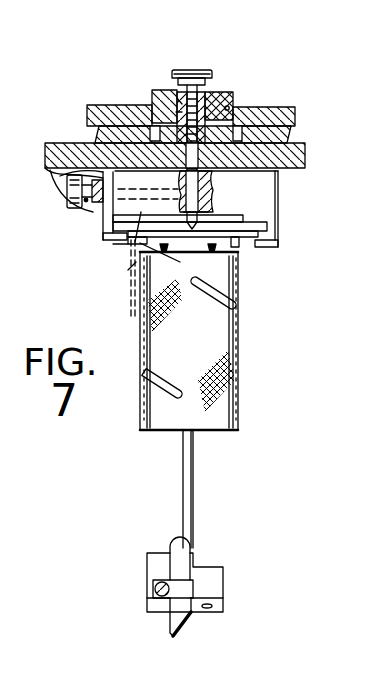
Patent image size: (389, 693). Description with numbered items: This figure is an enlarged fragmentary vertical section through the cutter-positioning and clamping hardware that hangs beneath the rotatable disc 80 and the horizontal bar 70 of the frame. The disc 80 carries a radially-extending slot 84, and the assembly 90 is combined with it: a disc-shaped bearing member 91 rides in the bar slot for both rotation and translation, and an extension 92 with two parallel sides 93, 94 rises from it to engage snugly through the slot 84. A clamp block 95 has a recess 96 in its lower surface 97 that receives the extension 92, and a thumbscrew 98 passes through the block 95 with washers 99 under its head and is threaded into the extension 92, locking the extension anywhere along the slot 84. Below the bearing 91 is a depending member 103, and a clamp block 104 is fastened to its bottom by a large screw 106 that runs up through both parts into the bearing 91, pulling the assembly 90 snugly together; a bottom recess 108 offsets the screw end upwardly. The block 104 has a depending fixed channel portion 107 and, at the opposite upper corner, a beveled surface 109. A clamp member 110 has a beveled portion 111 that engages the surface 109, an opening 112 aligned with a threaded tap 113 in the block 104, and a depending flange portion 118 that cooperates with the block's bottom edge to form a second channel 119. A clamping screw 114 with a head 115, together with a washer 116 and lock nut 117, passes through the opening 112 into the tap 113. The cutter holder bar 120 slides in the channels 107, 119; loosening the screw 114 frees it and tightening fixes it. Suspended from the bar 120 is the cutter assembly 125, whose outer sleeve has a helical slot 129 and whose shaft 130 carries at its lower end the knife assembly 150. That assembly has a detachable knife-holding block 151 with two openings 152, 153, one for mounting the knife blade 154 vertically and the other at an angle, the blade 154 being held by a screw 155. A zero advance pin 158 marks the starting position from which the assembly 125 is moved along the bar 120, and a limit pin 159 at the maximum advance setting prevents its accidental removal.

The horizontal bar 70 is at (90, 124).
The rotatable disc 80 is at (294, 112).
The radially-extending slot 84 is at (220, 108).
The assembly 90 is at (310, 190).
The disc-shaped bearing member 91 is at (259, 115).
The extension 92 is at (181, 112).
The parallel side 93 is at (153, 110).
The parallel side 94 is at (214, 100).
The clamp block 95 is at (180, 96).
The recess 96 is at (206, 95).
The lower surface 97 is at (232, 117).
The thumbscrew 98 is at (183, 70).
The washers 99 is at (176, 98).
The depending member 103 is at (290, 153).
The clamp block 104 is at (274, 202).
The large screw 106 is at (278, 171).
The depending fixed channel portion 107 is at (258, 243).
The bottom recess 108 is at (268, 226).
The beveled surface 109 is at (60, 144).
The clamp member 110 is at (115, 238).
The beveled portion 111 is at (131, 172).
The opening 112 is at (104, 231).
The threaded tap 113 is at (127, 272).
The clamping screw 114 is at (95, 203).
The head 115 is at (68, 192).
The washer 116 is at (70, 170).
The lock nut 117 is at (66, 176).
The depending flange portion 118 is at (130, 256).
The second channel 119 is at (120, 245).
The cutter holder bar 120 is at (219, 228).
The cutter assembly 125 is at (254, 398).
The helical slot 129 is at (236, 303).
The shaft 130 is at (194, 479).
The knife assembly 150 is at (258, 536).
The knife-holding block 151 is at (222, 586).
The opening 152 is at (194, 556).
The opening 153 is at (207, 612).
The knife blade 154 is at (172, 630).
The screw 155 is at (155, 589).
The zero advance pin 158 is at (180, 262).
The limit pin 159 is at (136, 306).